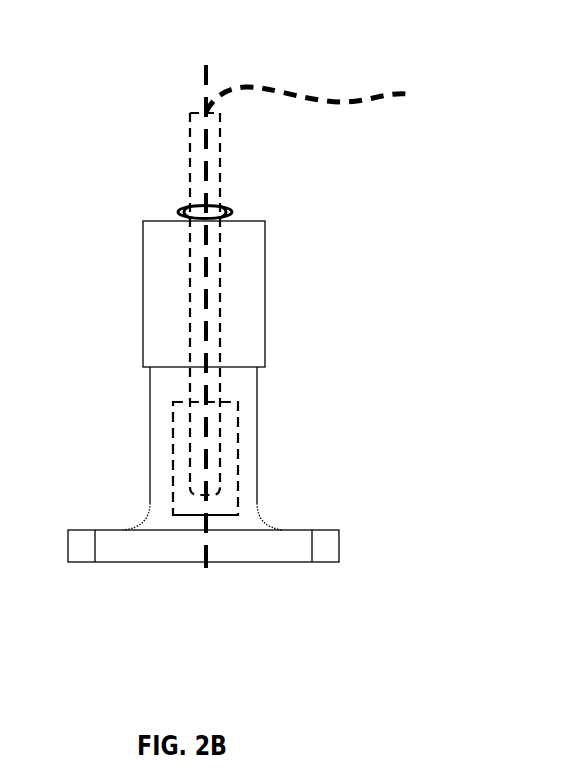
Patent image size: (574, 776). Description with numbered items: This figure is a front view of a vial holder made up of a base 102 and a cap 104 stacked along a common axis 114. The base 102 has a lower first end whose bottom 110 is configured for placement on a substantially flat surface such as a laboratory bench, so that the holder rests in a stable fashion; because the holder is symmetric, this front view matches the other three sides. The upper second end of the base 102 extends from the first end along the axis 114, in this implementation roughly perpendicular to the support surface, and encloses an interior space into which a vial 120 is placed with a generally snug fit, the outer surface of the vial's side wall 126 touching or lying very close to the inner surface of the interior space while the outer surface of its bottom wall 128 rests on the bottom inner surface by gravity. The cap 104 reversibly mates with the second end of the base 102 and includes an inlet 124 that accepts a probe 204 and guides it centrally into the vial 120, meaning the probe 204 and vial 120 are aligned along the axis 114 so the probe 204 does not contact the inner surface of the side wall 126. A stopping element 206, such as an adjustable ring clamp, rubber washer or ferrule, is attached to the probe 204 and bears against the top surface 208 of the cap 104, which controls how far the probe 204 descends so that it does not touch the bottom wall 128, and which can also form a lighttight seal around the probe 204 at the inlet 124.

The base 102 is at (338, 360).
The cap 104 is at (138, 312).
The bottom 110 is at (212, 570).
The axis 114 is at (208, 70).
The vial 120 is at (173, 410).
The inlet 124 is at (180, 160).
The side wall 126 is at (173, 468).
The bottom wall 128 is at (187, 515).
The probe 204 is at (221, 200).
The stopping element 206 is at (230, 212).
The top surface 208 is at (173, 220).